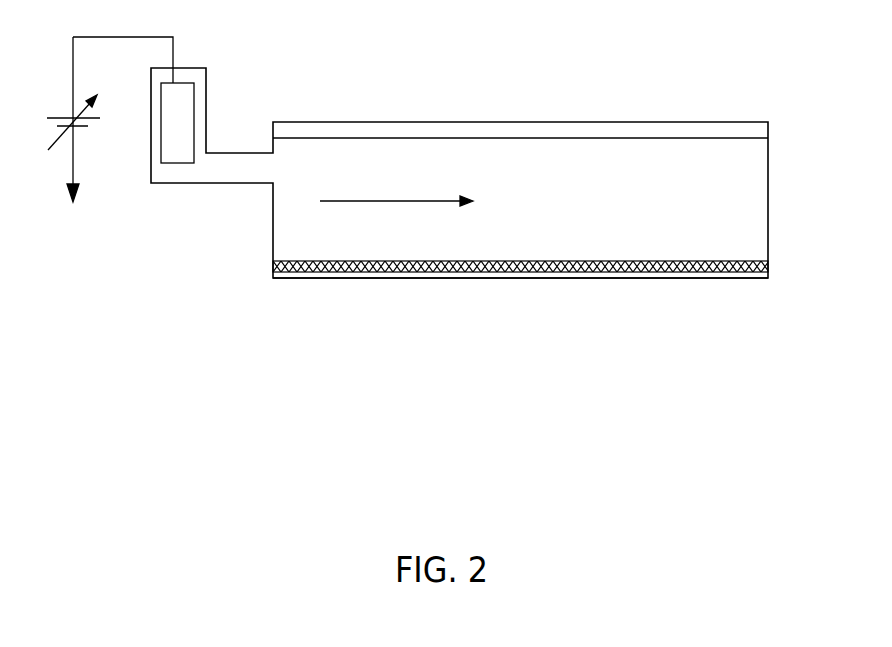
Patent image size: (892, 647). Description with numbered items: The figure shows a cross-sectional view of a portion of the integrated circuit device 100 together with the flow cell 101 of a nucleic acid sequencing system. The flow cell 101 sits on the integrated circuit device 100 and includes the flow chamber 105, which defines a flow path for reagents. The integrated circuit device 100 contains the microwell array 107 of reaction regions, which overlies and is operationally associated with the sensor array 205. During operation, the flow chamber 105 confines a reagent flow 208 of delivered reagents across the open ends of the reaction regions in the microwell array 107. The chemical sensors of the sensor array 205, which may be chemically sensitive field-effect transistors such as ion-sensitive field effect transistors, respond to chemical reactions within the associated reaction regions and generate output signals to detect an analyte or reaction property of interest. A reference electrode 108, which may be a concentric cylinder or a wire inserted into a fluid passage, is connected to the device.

The integrated circuit device 100 is at (436, 193).
The flow cell 101 is at (733, 130).
The flow chamber 105 is at (602, 155).
The microwell array 107 is at (687, 272).
The reference electrode 108 is at (194, 108).
The sensor array 205 is at (657, 278).
The reagent flow 208 is at (367, 197).